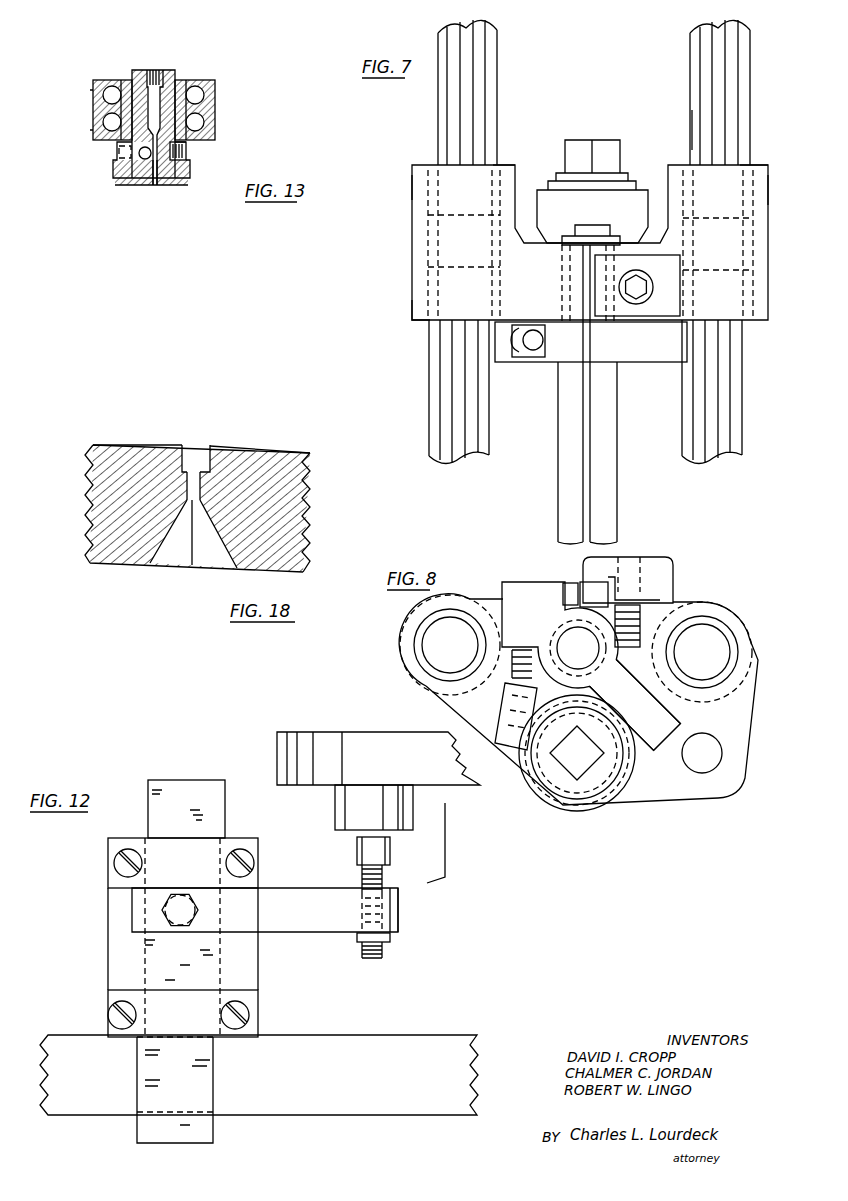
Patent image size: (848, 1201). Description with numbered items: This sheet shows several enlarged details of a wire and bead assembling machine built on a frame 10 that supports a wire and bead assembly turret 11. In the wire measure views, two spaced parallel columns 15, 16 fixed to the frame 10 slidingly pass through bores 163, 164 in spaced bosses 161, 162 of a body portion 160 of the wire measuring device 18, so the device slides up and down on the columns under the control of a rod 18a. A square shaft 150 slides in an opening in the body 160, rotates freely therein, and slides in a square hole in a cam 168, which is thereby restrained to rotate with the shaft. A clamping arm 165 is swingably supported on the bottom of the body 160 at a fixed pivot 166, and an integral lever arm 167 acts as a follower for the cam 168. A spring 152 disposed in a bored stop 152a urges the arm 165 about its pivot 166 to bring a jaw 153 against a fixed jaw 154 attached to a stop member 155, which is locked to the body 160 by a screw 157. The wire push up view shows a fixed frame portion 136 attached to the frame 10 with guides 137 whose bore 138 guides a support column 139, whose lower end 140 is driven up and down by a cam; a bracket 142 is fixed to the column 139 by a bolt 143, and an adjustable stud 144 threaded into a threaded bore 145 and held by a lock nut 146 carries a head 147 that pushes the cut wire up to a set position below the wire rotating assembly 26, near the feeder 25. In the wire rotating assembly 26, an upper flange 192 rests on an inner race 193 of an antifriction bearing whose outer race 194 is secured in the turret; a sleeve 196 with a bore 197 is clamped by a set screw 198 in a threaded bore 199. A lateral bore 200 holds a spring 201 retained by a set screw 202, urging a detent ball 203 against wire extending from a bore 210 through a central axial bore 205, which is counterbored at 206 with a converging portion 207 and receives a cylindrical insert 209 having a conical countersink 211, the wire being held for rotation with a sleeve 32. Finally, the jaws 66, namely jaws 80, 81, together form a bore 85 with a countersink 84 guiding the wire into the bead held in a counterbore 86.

In FIG. 12, the frame 10 is at (397, 1048).
In FIG. 12, the wire and bead assembly turret 11 is at (293, 743).
In FIG. 7, the column 15 is at (692, 70).
In FIG. 8, the column 15 is at (705, 622).
In FIG. 7, the column 16 is at (495, 70).
In FIG. 8, the column 16 is at (450, 615).
In FIG. 7, the wire measuring device 18 is at (412, 257).
In FIG. 8, the wire measuring device 18 is at (743, 738).
In FIG. 8, the rod 18a is at (703, 765).
In FIG. 12, the feeder 25 is at (352, 800).
In FIG. 13, the wire rotating assembly 26 is at (207, 87).
In FIG. 13, the sleeve 32 is at (163, 78).
In FIG. 18, the jaws 66 is at (287, 515).
In FIG. 18, the jaw 80 is at (293, 453).
In FIG. 18, the jaw 81 is at (127, 465).
In FIG. 18, the countersink 84 is at (172, 528).
In FIG. 18, the bore 85 is at (200, 490).
In FIG. 18, the counterbore 86 is at (210, 460).
In FIG. 12, the fixed frame portion 136 is at (250, 962).
In FIG. 12, the guides 137 is at (253, 1005).
In FIG. 12, the bore 138 is at (222, 850).
In FIG. 12, the support column 139 is at (185, 792).
In FIG. 12, the lower end of support column 140 is at (213, 1137).
In FIG. 12, the bracket 142 is at (283, 900).
In FIG. 12, the bolt 143 is at (162, 910).
In FIG. 12, the adjustable stud 144 is at (383, 878).
In FIG. 12, the threaded bore 145 is at (383, 923).
In FIG. 12, the lock nut 146 is at (357, 943).
In FIG. 12, the head 147 is at (387, 853).
In FIG. 7, the square shaft 150 is at (595, 483).
In FIG. 8, the square shaft 150 is at (573, 767).
In FIG. 8, the spring 152 is at (513, 670).
In FIG. 8, the bored stop 152a is at (512, 740).
In FIG. 8, the jaw 153 is at (578, 583).
In FIG. 8, the fixed jaw 154 is at (595, 590).
In FIG. 7, the stop member 155 is at (672, 280).
In FIG. 8, the stop member 155 is at (655, 567).
In FIG. 7, the screw 157 is at (643, 292).
In FIG. 8, the screw 157 is at (642, 558).
In FIG. 7, the body portion 160 is at (412, 307).
In FIG. 7, the boss 161 is at (768, 192).
In FIG. 7, the boss 162 is at (415, 192).
In FIG. 7, the bore 163 is at (752, 167).
In FIG. 7, the bore 164 is at (493, 165).
In FIG. 7, the clamping arm 165 is at (692, 127).
In FIG. 8, the clamping arm 165 is at (523, 597).
In FIG. 8, the fixed pivot 166 is at (577, 648).
In FIG. 7, the lever arm 167 is at (645, 350).
In FIG. 8, the lever arm 167 is at (653, 738).
In FIG. 8, the cam 168 is at (615, 783).
In FIG. 13, the upper flange 192 is at (170, 83).
In FIG. 13, the inner race 193 is at (125, 82).
In FIG. 13, the outer race 194 is at (213, 104).
In FIG. 13, the sleeve 196 is at (187, 160).
In FIG. 13, the bore 197 is at (172, 185).
In FIG. 13, the set screw 198 is at (187, 153).
In FIG. 13, the threaded bore 199 is at (187, 165).
In FIG. 13, the lateral bore 200 is at (122, 162).
In FIG. 13, the spring 201 is at (115, 153).
In FIG. 13, the set screw 202 is at (115, 157).
In FIG. 13, the detent ball 203 is at (147, 185).
In FIG. 13, the central axial bore 205 is at (162, 187).
In FIG. 13, the counterbore 206 is at (95, 107).
In FIG. 13, the converging portion 207 is at (117, 143).
In FIG. 13, the cylindrical insert 209 is at (160, 88).
In FIG. 13, the bore 210 is at (148, 72).
In FIG. 13, the conical countersink 211 is at (155, 90).